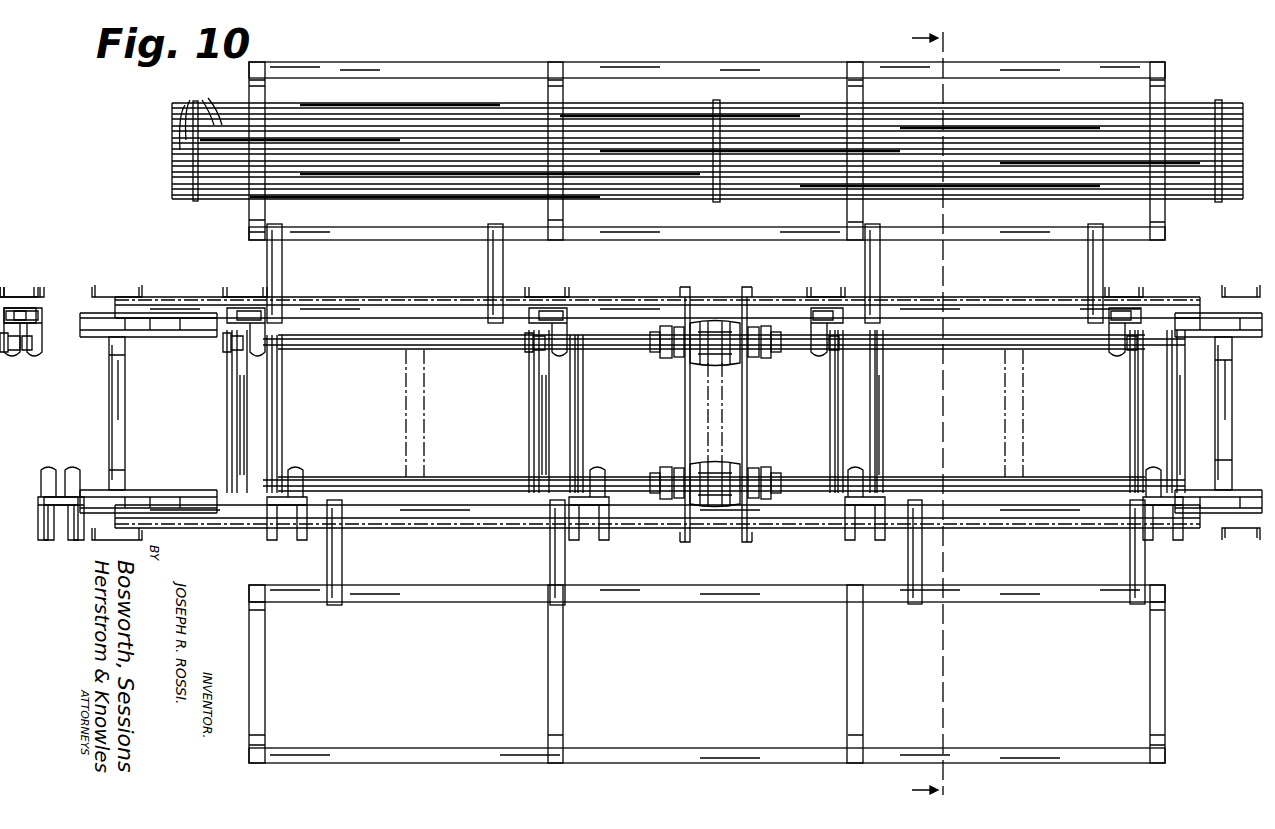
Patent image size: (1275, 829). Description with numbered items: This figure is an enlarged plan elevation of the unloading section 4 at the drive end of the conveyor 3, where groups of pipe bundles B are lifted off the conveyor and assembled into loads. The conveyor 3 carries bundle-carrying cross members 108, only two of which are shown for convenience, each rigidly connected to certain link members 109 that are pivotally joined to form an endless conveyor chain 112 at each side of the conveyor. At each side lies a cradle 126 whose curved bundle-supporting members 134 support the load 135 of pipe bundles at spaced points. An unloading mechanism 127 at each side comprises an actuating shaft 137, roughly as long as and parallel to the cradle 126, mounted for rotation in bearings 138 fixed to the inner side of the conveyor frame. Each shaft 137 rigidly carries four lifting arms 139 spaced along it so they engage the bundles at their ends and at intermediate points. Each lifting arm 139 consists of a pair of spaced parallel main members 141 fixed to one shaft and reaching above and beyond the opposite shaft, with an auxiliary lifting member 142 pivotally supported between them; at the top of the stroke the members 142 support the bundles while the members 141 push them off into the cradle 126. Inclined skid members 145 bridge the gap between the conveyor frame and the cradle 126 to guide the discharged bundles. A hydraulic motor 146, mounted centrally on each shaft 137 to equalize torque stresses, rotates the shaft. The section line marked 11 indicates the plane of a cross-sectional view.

The cradle 126 is at (656, 70).
The curved bundle-supporting member 134 is at (565, 90).
The load of pipe bundles 135 is at (450, 112).
The inclined skid member 145 is at (282, 265).
The link member 109 is at (142, 337).
The endless conveyor chain 112 is at (160, 313).
The bundle-carrying cross member 108 is at (125, 408).
The actuating shaft 137 is at (356, 350).
The unloading mechanism 127 is at (585, 358).
The motor 146 is at (712, 362).
The bearing 138 is at (255, 355).
The main member 141 is at (227, 420).
The auxiliary lifting member 142 is at (275, 370).
The lifting arm 139 is at (282, 400).
The section line 11- 11 is at (952, 418).
The conveyor 3 is at (147, 487).
The unloading section 4 is at (232, 246).
The bundle B is at (201, 113).